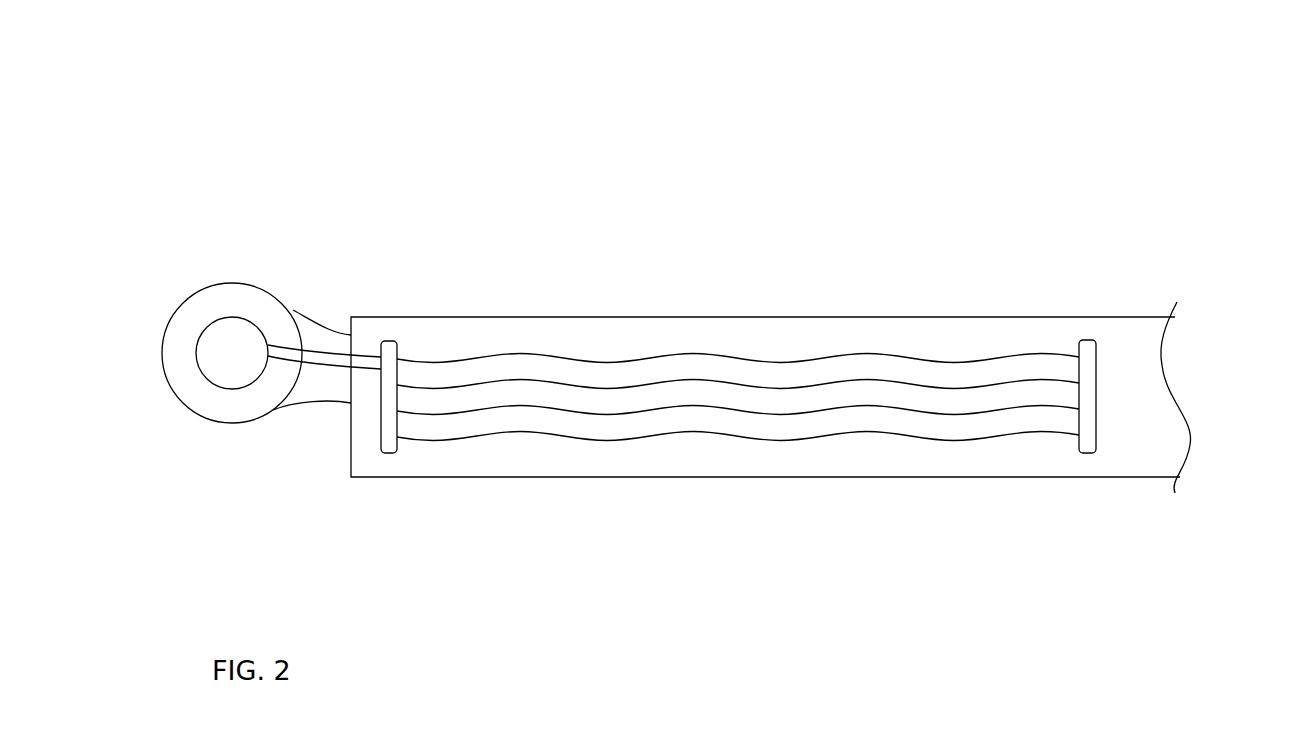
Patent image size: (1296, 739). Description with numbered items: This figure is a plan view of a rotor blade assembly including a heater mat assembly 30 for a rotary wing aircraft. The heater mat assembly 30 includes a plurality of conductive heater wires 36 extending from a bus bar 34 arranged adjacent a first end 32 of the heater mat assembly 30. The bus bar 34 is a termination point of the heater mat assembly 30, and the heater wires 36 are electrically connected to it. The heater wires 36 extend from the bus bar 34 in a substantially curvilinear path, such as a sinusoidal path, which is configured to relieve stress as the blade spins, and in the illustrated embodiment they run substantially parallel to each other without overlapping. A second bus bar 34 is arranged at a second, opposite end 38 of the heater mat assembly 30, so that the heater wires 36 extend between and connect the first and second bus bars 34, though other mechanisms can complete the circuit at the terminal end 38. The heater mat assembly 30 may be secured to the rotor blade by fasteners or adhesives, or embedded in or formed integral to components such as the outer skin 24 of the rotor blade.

The heater mat assembly 30 is at (396, 108).
The first end 32 is at (350, 455).
The outer skin 24 is at (735, 457).
The bus bar 34 is at (390, 340).
The heater wires 36 is at (623, 388).
The second end 38 is at (1167, 327).